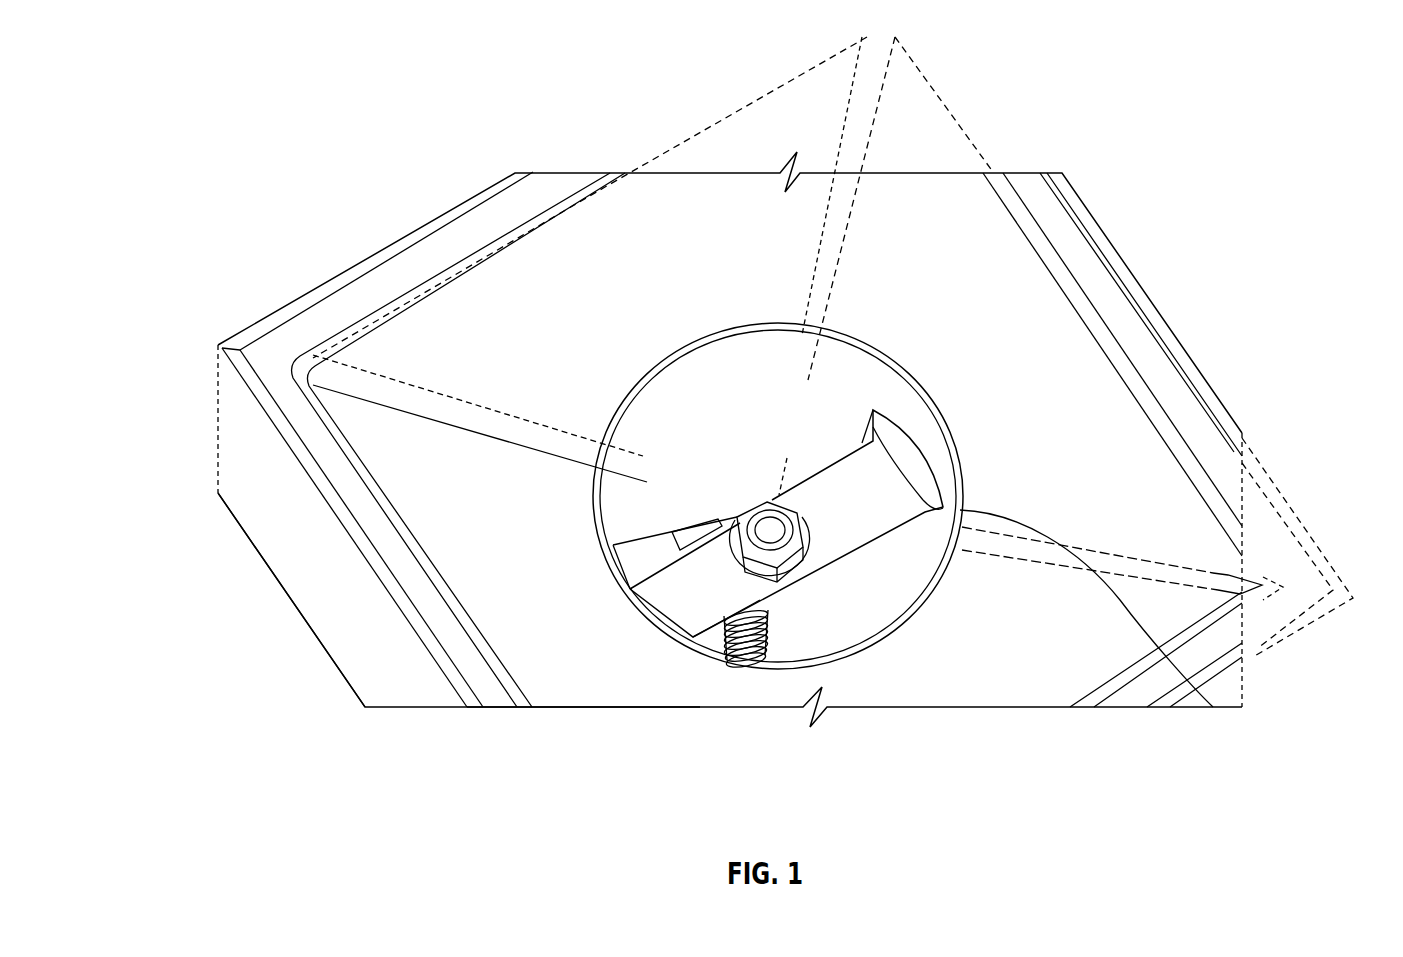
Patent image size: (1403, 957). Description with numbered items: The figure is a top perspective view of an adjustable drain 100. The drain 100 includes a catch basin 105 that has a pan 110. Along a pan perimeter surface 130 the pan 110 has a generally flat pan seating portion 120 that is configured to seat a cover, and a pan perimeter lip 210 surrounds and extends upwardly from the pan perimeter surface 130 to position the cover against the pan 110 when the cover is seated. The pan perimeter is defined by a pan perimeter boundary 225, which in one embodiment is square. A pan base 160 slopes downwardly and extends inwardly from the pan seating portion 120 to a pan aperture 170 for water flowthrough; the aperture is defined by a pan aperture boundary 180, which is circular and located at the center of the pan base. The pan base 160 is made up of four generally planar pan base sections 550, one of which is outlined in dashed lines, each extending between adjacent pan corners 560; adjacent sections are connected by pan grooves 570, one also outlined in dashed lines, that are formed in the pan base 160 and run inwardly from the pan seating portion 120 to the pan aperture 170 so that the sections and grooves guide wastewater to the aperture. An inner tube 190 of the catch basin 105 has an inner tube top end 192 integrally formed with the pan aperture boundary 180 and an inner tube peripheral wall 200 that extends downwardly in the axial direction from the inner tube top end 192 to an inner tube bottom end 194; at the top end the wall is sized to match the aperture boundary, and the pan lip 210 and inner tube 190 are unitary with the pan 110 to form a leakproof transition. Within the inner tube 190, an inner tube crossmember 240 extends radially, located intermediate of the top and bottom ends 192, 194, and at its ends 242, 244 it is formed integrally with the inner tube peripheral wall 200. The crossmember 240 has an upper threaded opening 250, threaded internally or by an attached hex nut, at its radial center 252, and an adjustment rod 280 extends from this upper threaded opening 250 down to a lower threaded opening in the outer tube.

The adjustable drain 100 is at (219, 70).
The catch basin 105 is at (1232, 417).
The pan 110 is at (1113, 408).
The pan seating portion 120 is at (1098, 287).
The pan perimeter surface 130 is at (1180, 680).
The pan base 160 is at (582, 683).
The pan aperture 170 is at (917, 594).
The pan aperture boundary 180 is at (1180, 680).
The inner tube 190 is at (903, 385).
The inner tube top end 192 is at (637, 377).
The inner tube bottom end 194 is at (643, 550).
The inner tube peripheral wall 200 is at (807, 380).
The pan perimeter lip 210 is at (420, 637).
The pan perimeter boundary 225 is at (367, 565).
The inner tube crossmember 240 is at (863, 560).
The inner tube crossmember end 242 is at (687, 580).
The inner tube crossmember end 244 is at (927, 483).
The upper threaded opening 250 is at (760, 507).
The radial center 252 is at (795, 595).
The adjustment rod 280 is at (743, 613).
The pan base sections 550 is at (770, 93).
The pan corners 560 is at (238, 340).
The pan grooves 570 is at (1215, 563).